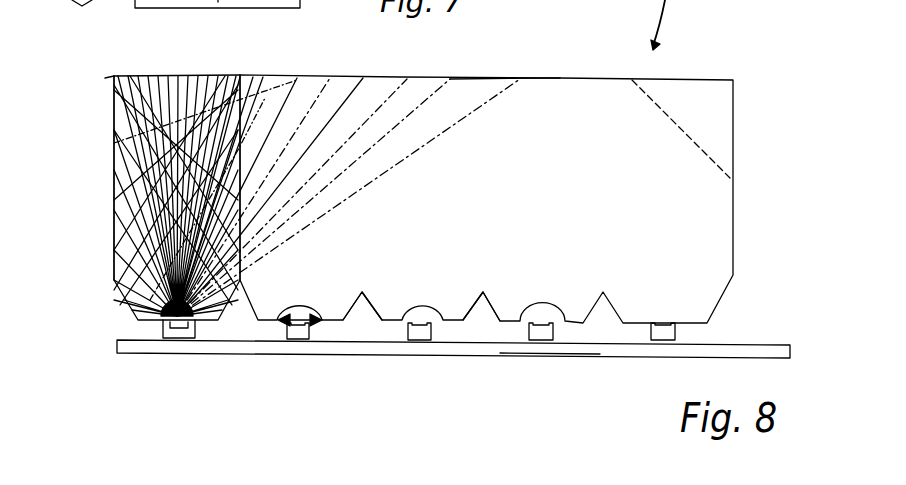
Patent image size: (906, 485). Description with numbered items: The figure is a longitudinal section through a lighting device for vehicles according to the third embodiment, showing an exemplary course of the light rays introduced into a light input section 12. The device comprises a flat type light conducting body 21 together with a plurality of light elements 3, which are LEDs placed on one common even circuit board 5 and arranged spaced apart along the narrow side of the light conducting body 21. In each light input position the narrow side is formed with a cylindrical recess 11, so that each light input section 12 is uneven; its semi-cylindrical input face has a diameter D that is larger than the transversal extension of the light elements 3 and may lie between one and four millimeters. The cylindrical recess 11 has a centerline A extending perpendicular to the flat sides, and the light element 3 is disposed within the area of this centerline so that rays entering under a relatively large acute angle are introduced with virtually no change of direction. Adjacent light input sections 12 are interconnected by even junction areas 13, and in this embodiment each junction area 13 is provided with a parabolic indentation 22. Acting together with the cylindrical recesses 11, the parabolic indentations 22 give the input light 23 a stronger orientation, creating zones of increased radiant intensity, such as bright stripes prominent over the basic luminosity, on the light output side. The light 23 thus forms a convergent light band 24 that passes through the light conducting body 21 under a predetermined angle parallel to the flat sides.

The light element 3 is at (548, 339).
The circuit board 5 is at (600, 355).
The cylindrical recess 11 is at (218, 22).
The light input section 12 is at (163, 362).
The junction area 13 is at (497, 345).
The light conducting body 21 is at (538, 95).
The parabolic indentation 22 is at (355, 312).
The input light 23 is at (148, 128).
The convergent light band 24 is at (137, 170).
The diameter D is at (300, 325).
The centerline A is at (492, 337).